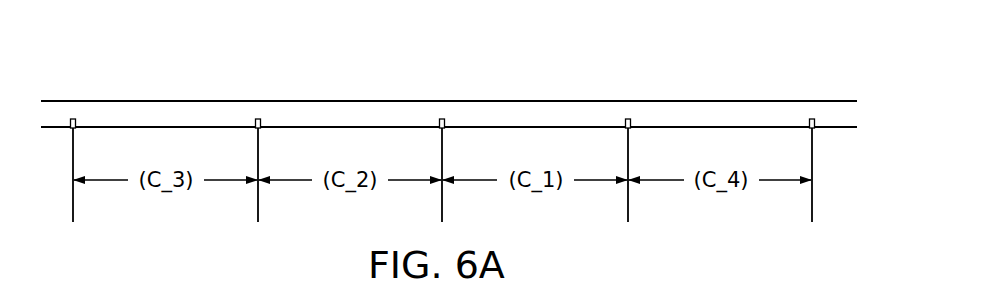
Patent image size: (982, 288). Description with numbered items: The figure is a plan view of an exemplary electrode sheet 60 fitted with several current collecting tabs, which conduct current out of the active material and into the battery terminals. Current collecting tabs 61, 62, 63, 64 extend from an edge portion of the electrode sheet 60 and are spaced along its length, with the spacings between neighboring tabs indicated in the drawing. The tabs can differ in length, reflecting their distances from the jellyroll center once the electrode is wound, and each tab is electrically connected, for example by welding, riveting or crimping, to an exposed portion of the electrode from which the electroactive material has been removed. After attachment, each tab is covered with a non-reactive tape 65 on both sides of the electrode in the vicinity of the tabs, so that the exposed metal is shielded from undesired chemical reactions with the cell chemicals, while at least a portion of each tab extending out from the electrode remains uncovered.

The electrode sheet 60 is at (194, 100).
The current collecting tab 61 is at (626, 129).
The current collecting tab 62 is at (440, 129).
The current collecting tab 63 is at (256, 129).
The current collecting tab 64 is at (77, 129).
The non-reactive tape 65 is at (811, 120).